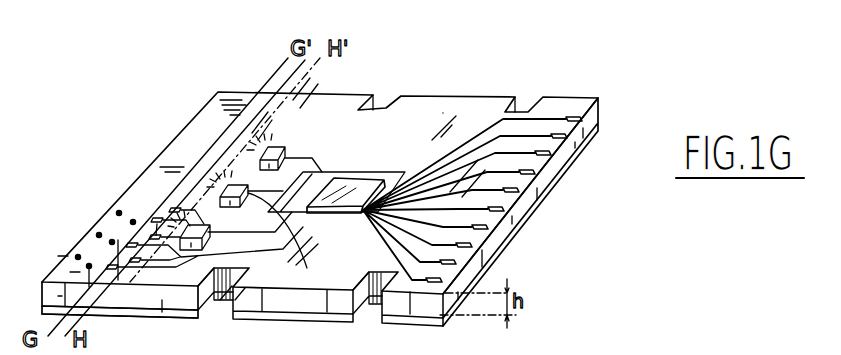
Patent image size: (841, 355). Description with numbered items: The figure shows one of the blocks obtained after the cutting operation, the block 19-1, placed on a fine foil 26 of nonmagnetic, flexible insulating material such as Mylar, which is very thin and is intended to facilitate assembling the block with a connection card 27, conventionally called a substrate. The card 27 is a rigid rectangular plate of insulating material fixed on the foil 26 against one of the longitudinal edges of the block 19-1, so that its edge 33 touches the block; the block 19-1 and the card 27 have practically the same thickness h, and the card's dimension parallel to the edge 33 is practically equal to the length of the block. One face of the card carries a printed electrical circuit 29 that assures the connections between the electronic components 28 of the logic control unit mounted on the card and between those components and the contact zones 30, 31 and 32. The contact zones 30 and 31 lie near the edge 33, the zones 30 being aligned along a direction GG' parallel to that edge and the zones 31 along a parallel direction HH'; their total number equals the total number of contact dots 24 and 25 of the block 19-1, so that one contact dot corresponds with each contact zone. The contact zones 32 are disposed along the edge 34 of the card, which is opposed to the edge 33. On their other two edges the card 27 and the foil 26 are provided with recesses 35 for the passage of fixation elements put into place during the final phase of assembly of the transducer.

The block 19-1 is at (218, 92).
The edge 33 is at (207, 150).
The contact zones 31 is at (153, 236).
The contact zones 30 is at (113, 265).
The contact dots 25 is at (97, 235).
The contact dots 24 is at (126, 252).
The foil 26 is at (165, 314).
The electronic components 28 is at (320, 212).
The printed electrical circuit 29 is at (398, 181).
The connection card 27 is at (443, 114).
The recesses 35 is at (528, 108).
The contact zones 32 is at (535, 173).
The edge 34 is at (508, 220).